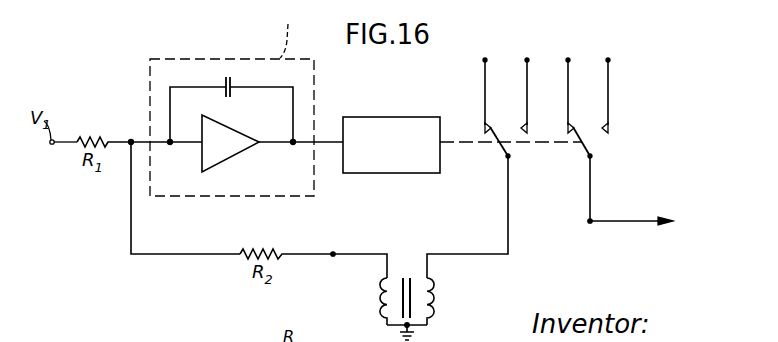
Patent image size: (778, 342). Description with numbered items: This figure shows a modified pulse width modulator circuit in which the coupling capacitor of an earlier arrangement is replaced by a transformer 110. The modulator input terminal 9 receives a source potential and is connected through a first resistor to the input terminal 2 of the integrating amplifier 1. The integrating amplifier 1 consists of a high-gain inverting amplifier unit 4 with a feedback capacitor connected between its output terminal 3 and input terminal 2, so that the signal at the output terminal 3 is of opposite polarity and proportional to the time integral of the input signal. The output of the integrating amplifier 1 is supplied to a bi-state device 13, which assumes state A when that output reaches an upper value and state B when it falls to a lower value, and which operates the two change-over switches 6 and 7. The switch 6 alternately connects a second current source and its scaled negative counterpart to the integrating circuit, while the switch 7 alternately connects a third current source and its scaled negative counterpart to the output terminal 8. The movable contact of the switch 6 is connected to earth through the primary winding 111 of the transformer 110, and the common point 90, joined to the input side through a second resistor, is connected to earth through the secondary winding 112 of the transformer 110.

The integrating amplifier 1 is at (150, 73).
The input terminal 2 is at (170, 145).
The output terminal 3 is at (293, 145).
The high-gain inverting amplifier unit 4 is at (228, 158).
The change-over switch 6 is at (506, 152).
The change-over switch 7 is at (592, 150).
The output terminal 8 is at (590, 221).
The input terminal 9 is at (52, 145).
The bi-state device 13 is at (400, 174).
The common point 90 is at (333, 253).
The transformer 110 is at (409, 277).
The primary winding 111 is at (435, 297).
The secondary winding 112 is at (378, 298).